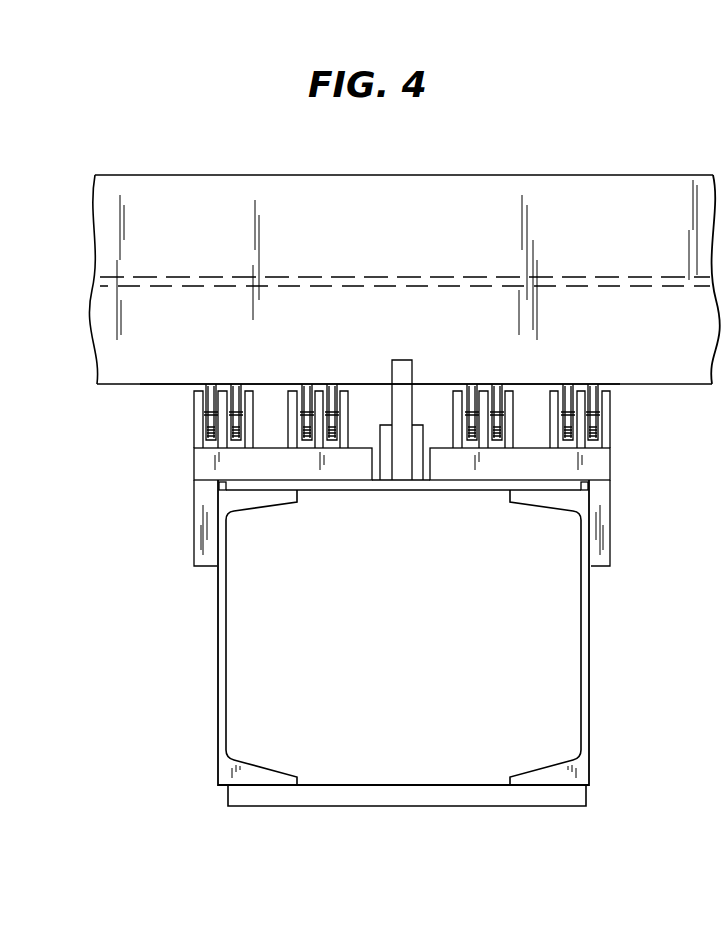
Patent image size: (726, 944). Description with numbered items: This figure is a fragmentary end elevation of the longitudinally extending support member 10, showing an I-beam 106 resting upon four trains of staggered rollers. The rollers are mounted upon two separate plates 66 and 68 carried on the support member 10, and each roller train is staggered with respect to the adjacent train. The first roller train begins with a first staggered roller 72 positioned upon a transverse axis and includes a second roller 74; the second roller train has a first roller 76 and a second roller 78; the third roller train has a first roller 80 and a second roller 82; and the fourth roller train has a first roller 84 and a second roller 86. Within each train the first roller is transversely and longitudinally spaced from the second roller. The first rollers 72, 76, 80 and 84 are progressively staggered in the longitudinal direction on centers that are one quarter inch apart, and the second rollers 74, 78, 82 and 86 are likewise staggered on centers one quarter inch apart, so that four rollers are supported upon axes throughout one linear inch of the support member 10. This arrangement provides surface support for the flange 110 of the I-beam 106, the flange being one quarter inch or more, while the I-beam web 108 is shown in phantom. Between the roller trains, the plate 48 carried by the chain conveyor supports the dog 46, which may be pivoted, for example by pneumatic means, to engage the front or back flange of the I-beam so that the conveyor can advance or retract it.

The elongated support member 10 is at (591, 633).
The dog 46 is at (402, 364).
The plate 48 is at (385, 470).
The plate 66 is at (193, 473).
The plate 68 is at (604, 462).
The first staggered roller 72 is at (216, 384).
The second roller 74 is at (237, 384).
The first roller 76 is at (303, 384).
The second roller 78 is at (333, 384).
The first roller 80 is at (473, 384).
The second roller 82 is at (497, 384).
The first roller 84 is at (567, 384).
The second roller 86 is at (593, 384).
The I-beam 106 is at (332, 188).
The I-beam web 108 is at (102, 273).
The flange 110 is at (148, 386).